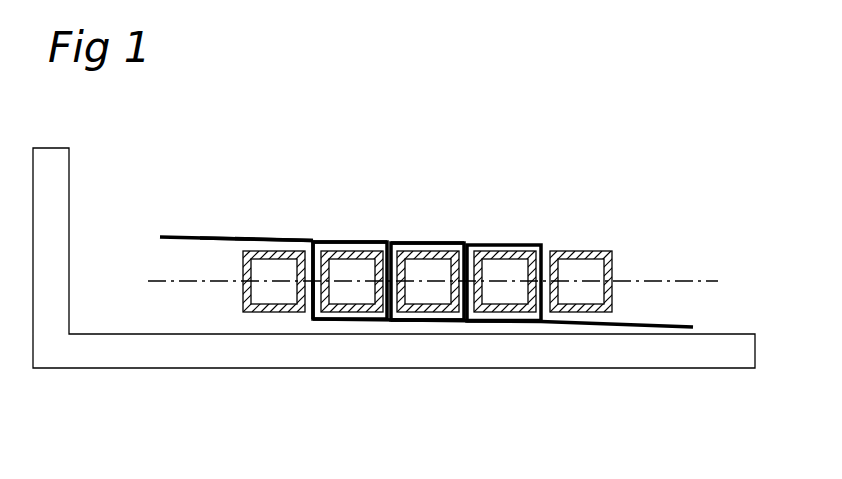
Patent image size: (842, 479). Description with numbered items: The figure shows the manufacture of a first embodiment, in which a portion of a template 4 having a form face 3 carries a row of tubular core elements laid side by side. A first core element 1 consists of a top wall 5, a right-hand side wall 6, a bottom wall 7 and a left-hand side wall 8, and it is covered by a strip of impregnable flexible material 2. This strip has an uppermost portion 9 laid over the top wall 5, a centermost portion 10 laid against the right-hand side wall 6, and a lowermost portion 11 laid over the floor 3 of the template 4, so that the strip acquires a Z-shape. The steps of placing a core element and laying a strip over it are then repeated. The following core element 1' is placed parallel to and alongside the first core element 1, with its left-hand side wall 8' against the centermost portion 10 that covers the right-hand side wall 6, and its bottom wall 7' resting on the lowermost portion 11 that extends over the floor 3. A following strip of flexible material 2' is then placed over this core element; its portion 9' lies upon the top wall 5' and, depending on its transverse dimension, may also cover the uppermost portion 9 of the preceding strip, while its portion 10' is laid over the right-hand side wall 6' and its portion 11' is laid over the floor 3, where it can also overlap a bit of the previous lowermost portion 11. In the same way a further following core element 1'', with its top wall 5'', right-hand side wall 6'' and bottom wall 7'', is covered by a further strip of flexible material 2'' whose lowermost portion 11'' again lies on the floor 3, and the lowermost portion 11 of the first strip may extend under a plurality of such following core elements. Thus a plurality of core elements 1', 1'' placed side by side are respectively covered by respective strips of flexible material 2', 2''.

The first core element 1 is at (273, 306).
The following core element 1' is at (351, 292).
The following core element 1'' is at (427, 307).
The strip of impregnable flexible material 2 is at (225, 199).
The following strip of flexible material 2' is at (350, 201).
The following strip of flexible material 2'' is at (427, 202).
The form face 3 is at (633, 333).
The template 4 is at (148, 374).
The top wall 5 is at (273, 236).
The top wall 5' is at (351, 222).
The top wall 5'' is at (427, 237).
The right-hand side wall 6 is at (352, 236).
The right-hand side wall 6' is at (428, 237).
The right-hand side wall 6'' is at (504, 241).
The bottom wall 7 is at (272, 355).
The bottom wall 7' is at (352, 355).
The bottom wall 7'' is at (428, 356).
The left-hand side wall 8 is at (236, 242).
The left-hand side wall 8' is at (408, 365).
The uppermost portion 9 is at (274, 200).
The uppermost portion 9' is at (312, 230).
The centermost portion 10 is at (356, 256).
The centermost portion 10' is at (430, 256).
The lowermost portion 11 is at (301, 366).
The lowermost portion 11' is at (420, 383).
The lowermost portion 11'' is at (504, 385).